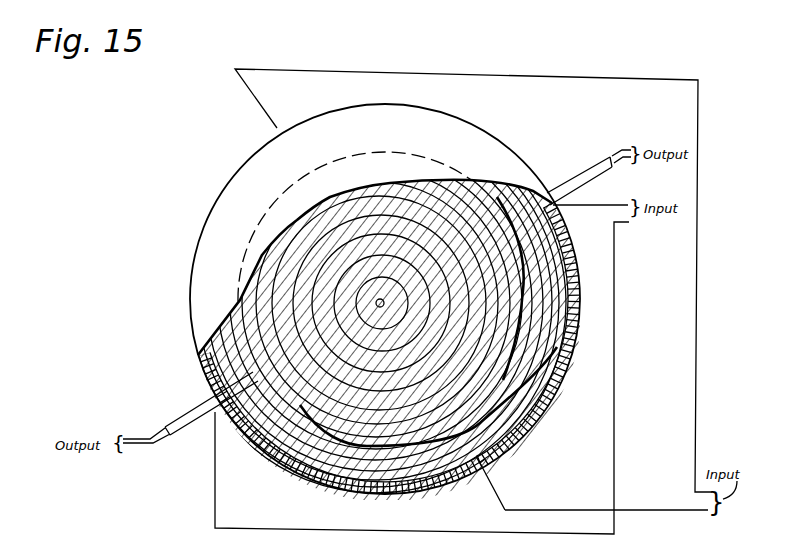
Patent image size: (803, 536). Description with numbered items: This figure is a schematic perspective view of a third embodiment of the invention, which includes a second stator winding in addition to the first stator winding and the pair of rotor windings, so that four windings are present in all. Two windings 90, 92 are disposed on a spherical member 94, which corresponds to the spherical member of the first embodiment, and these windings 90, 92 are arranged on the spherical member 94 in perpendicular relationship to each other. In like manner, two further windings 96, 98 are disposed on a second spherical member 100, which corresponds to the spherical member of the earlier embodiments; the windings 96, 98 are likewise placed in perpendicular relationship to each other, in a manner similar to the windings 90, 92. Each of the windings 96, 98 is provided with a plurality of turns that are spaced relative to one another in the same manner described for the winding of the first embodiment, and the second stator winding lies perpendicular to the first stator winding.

The winding 90 is at (330, 475).
The winding 92 is at (350, 483).
The spherical member 94 is at (456, 487).
The winding 96 is at (266, 452).
The winding 98 is at (295, 462).
The spherical member 100 is at (496, 388).